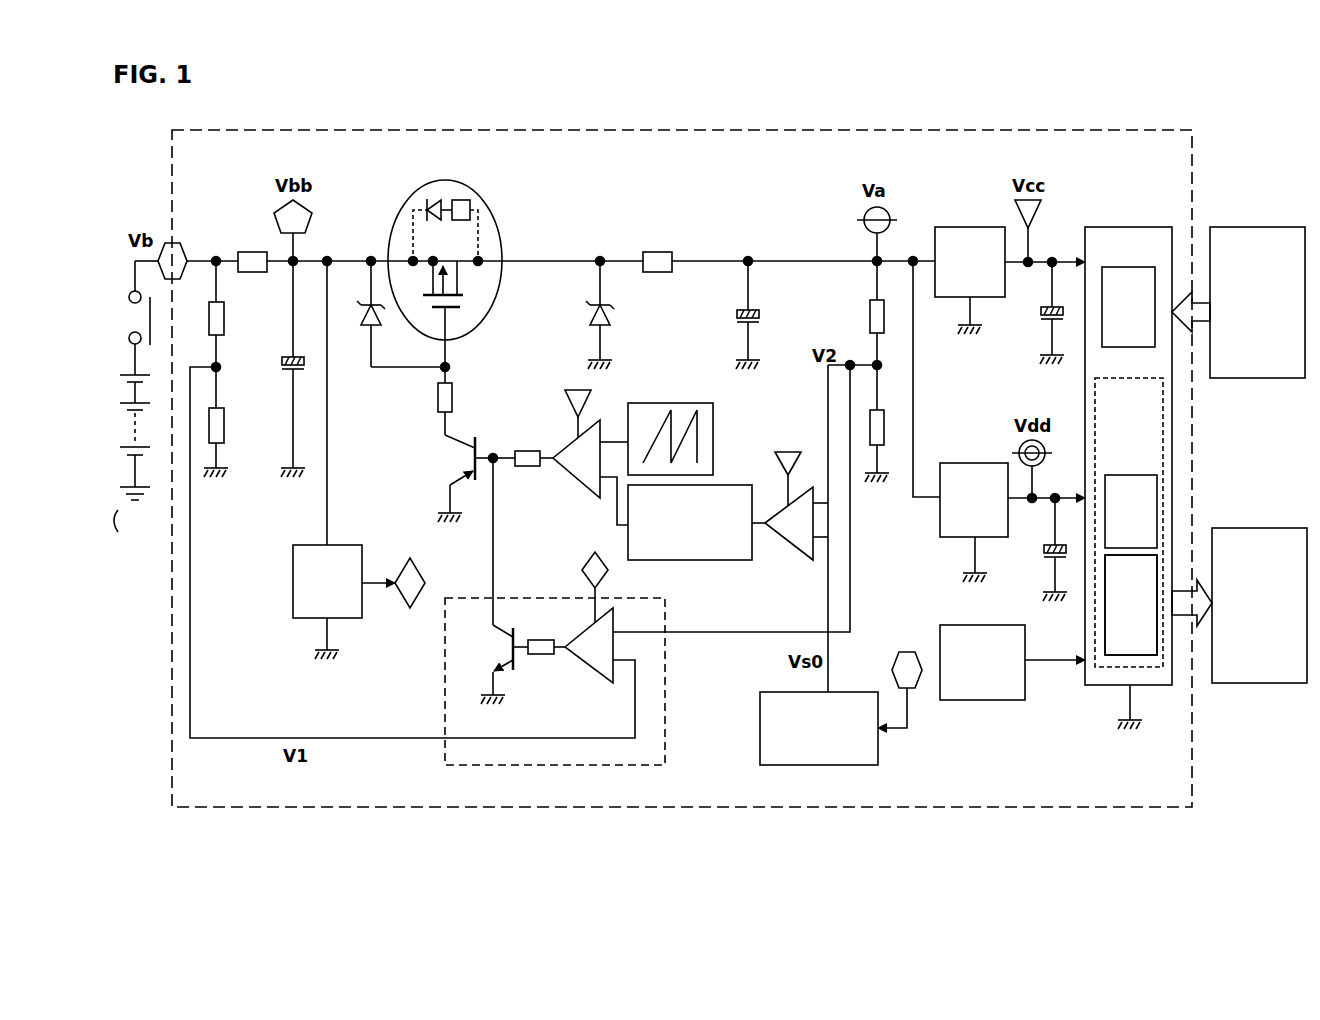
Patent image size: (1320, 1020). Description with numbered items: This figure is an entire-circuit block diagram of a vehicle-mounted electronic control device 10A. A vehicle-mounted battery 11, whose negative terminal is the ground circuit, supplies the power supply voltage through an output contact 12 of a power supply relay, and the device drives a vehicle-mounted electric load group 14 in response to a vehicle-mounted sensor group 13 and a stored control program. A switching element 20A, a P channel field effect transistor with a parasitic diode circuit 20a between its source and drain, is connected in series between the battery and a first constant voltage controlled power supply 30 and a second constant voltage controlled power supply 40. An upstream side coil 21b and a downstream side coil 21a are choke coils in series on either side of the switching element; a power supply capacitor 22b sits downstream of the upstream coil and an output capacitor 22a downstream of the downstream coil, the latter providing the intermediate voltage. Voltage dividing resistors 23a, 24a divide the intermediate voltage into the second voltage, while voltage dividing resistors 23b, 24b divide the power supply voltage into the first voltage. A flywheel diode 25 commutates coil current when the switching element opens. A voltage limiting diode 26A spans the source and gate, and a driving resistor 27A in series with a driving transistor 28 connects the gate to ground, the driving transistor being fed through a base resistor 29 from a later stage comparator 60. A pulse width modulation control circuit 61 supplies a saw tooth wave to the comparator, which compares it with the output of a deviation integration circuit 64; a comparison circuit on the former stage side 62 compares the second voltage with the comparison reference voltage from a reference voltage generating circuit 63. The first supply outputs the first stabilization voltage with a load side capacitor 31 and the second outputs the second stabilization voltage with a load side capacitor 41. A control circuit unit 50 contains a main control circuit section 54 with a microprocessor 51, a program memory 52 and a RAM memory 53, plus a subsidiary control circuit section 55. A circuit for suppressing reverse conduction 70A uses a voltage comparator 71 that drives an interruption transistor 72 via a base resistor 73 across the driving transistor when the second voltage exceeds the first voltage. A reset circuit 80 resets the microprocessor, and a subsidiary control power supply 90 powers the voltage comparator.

The vehicle-mounted electronic control device 10A is at (172, 727).
The vehicle-mounted battery 11 is at (118, 400).
The output contact 12 is at (118, 318).
The vehicle-mounted sensor group 13 is at (1250, 227).
The vehicle-mounted electric load group 14 is at (1250, 528).
The switching element 20A is at (454, 260).
The parasitic diode circuit 20a is at (430, 205).
The downstream side coil 21a is at (661, 252).
The upstream side coil 21b is at (250, 252).
The output capacitor 22a is at (737, 315).
The power supply capacitor 22b is at (280, 372).
The voltage dividing resistor 23a is at (870, 316).
The voltage dividing resistor 23b is at (224, 318).
The voltage dividing resistor 24a is at (890, 430).
The voltage dividing resistor 24b is at (226, 428).
The flywheel diode 25 is at (590, 316).
The voltage limiting diode 26A is at (360, 315).
The driving resistor 27A is at (437, 393).
The driving transistor 28 is at (465, 452).
The base resistor 29 is at (527, 451).
The first constant voltage controlled power supply 30 is at (966, 227).
The load side capacitor 31 is at (1041, 316).
The second constant voltage controlled power supply 40 is at (975, 463).
The load side capacitor 41 is at (1044, 552).
The control circuit unit 50 is at (1128, 455).
The microprocessor 51 is at (1131, 511).
The program memory 52 is at (1131, 605).
The RAM memory 53 is at (1131, 605).
The main control circuit section 54 is at (1129, 522).
The subsidiary control circuit section 55 is at (1128, 307).
The later stage comparator 60 is at (572, 478).
The pulse width modulation control circuit 61 is at (713, 432).
The comparison circuit on the former stage side 62 is at (802, 557).
The reference voltage generating circuit 63 is at (760, 724).
The deviation integration circuit 64 is at (674, 560).
The circuit for suppressing reverse conduction 70A is at (538, 598).
The voltage comparator 71 is at (603, 677).
The interruption transistor 72 is at (505, 645).
The base resistor 73 is at (546, 654).
The reset circuit 80 is at (985, 700).
The subsidiary control power supply 90 is at (293, 600).